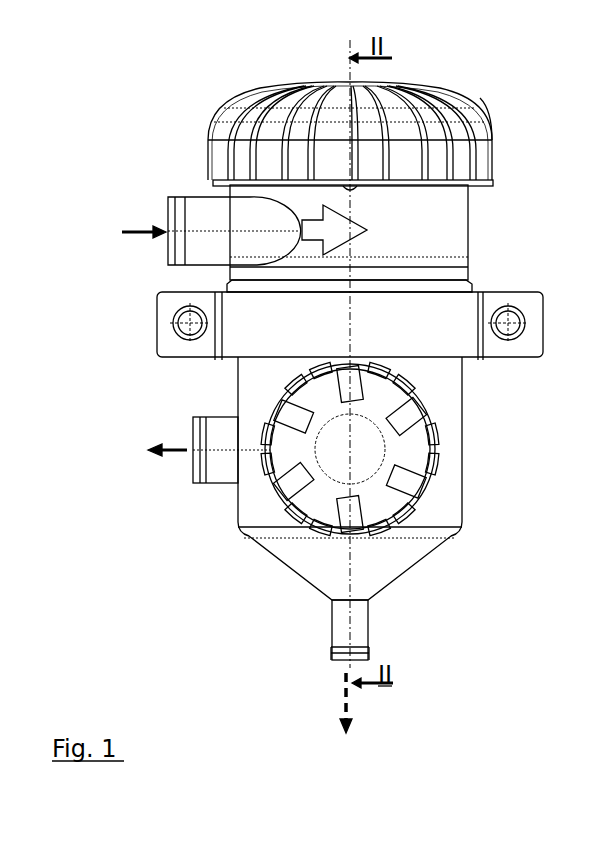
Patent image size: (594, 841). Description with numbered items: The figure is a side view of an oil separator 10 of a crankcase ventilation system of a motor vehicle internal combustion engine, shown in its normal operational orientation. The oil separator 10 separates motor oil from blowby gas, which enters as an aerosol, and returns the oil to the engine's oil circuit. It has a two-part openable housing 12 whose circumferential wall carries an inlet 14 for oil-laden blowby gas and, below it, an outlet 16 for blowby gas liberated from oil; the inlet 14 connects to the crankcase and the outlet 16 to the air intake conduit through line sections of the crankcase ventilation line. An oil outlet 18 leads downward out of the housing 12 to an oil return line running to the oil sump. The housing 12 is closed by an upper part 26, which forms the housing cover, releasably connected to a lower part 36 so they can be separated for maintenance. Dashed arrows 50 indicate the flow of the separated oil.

The oil separator 10 is at (112, 88).
The housing 12 is at (248, 92).
The inlet 14 is at (197, 213).
The outlet 16 is at (220, 432).
The oil outlet 18 is at (338, 630).
The upper part 26 is at (484, 137).
The lower part 36 is at (452, 437).
The dashed arrows 50 is at (346, 700).